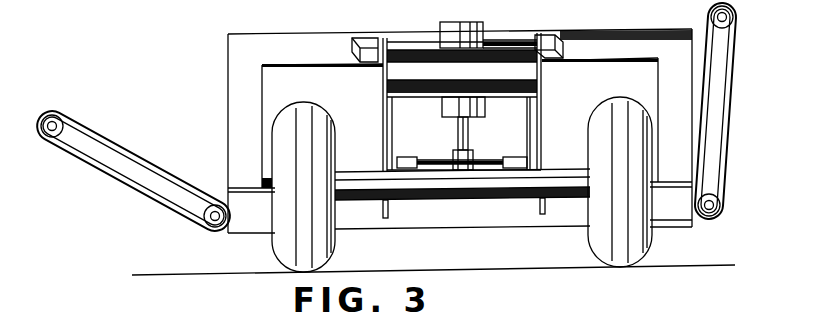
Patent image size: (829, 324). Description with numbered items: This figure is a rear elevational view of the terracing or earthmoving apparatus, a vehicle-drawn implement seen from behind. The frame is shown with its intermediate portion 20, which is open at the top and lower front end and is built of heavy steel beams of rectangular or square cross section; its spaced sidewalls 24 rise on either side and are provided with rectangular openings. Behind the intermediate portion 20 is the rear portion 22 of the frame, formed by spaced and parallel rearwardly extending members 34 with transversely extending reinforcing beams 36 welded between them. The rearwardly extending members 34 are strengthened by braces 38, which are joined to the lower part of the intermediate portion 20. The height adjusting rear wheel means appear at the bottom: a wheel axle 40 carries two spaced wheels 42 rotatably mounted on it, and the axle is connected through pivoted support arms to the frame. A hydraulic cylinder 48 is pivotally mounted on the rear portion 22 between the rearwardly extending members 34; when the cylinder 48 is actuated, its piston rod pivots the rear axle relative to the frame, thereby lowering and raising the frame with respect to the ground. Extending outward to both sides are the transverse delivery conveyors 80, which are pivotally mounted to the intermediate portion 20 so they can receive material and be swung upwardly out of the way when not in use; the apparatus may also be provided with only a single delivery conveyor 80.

The intermediate portion 20 is at (620, 30).
The rear portion 22 is at (687, 0).
The sidewalls 24 is at (228, 110).
The rearwardly extending members 34 is at (372, 45).
The reinforcing beams 36 is at (435, 90).
The braces 38 is at (384, 140).
The wheel axle 40 is at (500, 188).
The wheels 42 is at (303, 108).
The hydraulic cylinder 48 is at (467, 22).
The delivery conveyors 80 is at (163, 170).